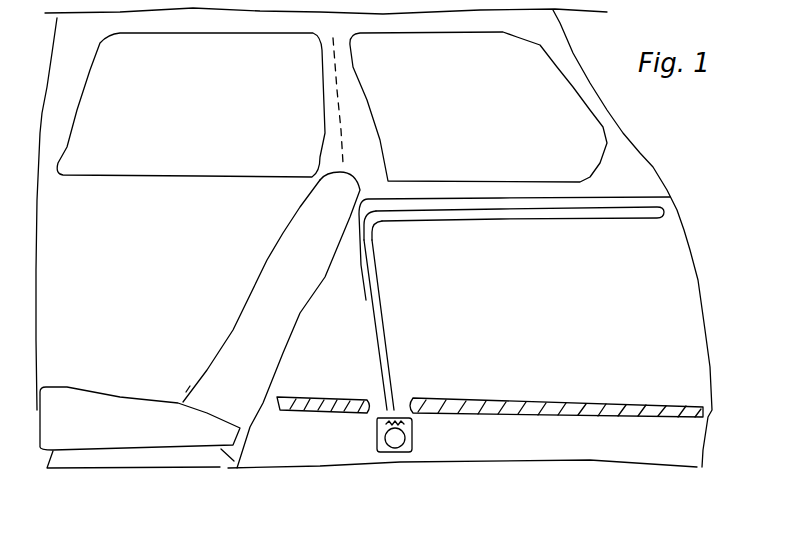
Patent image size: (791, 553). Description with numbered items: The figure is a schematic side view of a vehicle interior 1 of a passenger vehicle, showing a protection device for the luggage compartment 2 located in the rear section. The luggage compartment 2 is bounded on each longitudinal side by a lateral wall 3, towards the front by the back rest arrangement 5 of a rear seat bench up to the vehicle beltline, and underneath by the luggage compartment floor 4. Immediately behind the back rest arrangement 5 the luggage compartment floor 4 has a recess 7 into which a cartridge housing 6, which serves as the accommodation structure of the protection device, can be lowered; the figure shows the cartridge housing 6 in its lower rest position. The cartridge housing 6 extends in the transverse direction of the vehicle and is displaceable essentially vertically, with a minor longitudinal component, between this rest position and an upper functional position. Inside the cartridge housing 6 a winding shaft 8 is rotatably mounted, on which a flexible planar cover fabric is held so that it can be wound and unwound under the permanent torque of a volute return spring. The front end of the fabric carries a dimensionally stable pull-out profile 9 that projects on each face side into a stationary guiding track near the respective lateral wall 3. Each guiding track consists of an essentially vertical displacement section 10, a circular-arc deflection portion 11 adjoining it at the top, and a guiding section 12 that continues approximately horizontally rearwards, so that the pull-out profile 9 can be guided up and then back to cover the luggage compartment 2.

The vehicle interior 1 is at (262, 105).
The luggage compartment 2 is at (627, 318).
The lateral wall 3 is at (545, 315).
The luggage compartment floor 4 is at (548, 398).
The back rest arrangement 5 is at (313, 316).
The cartridge housing 6 is at (377, 442).
The recess 7 is at (370, 417).
The winding shaft 8 is at (408, 439).
The pull-out profile 9 is at (412, 422).
The displacement section 10 is at (381, 327).
The deflection portion 11 is at (374, 222).
The guiding section 12 is at (500, 219).